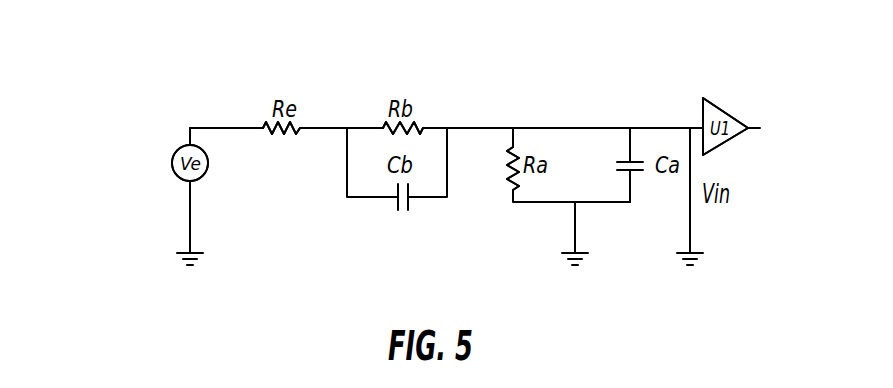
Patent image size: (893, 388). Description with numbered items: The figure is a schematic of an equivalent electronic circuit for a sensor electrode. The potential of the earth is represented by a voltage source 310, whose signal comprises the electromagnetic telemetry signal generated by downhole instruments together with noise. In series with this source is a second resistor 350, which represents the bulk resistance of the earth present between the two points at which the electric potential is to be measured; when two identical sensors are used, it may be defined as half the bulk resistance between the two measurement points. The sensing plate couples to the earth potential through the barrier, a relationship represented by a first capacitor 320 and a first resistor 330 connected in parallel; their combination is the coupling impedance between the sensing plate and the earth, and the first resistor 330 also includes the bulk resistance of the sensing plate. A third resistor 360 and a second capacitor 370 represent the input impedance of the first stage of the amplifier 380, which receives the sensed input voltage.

The voltage source 310 is at (166, 152).
The first capacitor 320 is at (414, 203).
The first resistor 330 is at (424, 118).
The second resistor 350 is at (258, 97).
The third resistor 360 is at (529, 118).
The second capacitor 370 is at (641, 142).
The amplifier 380 is at (736, 112).